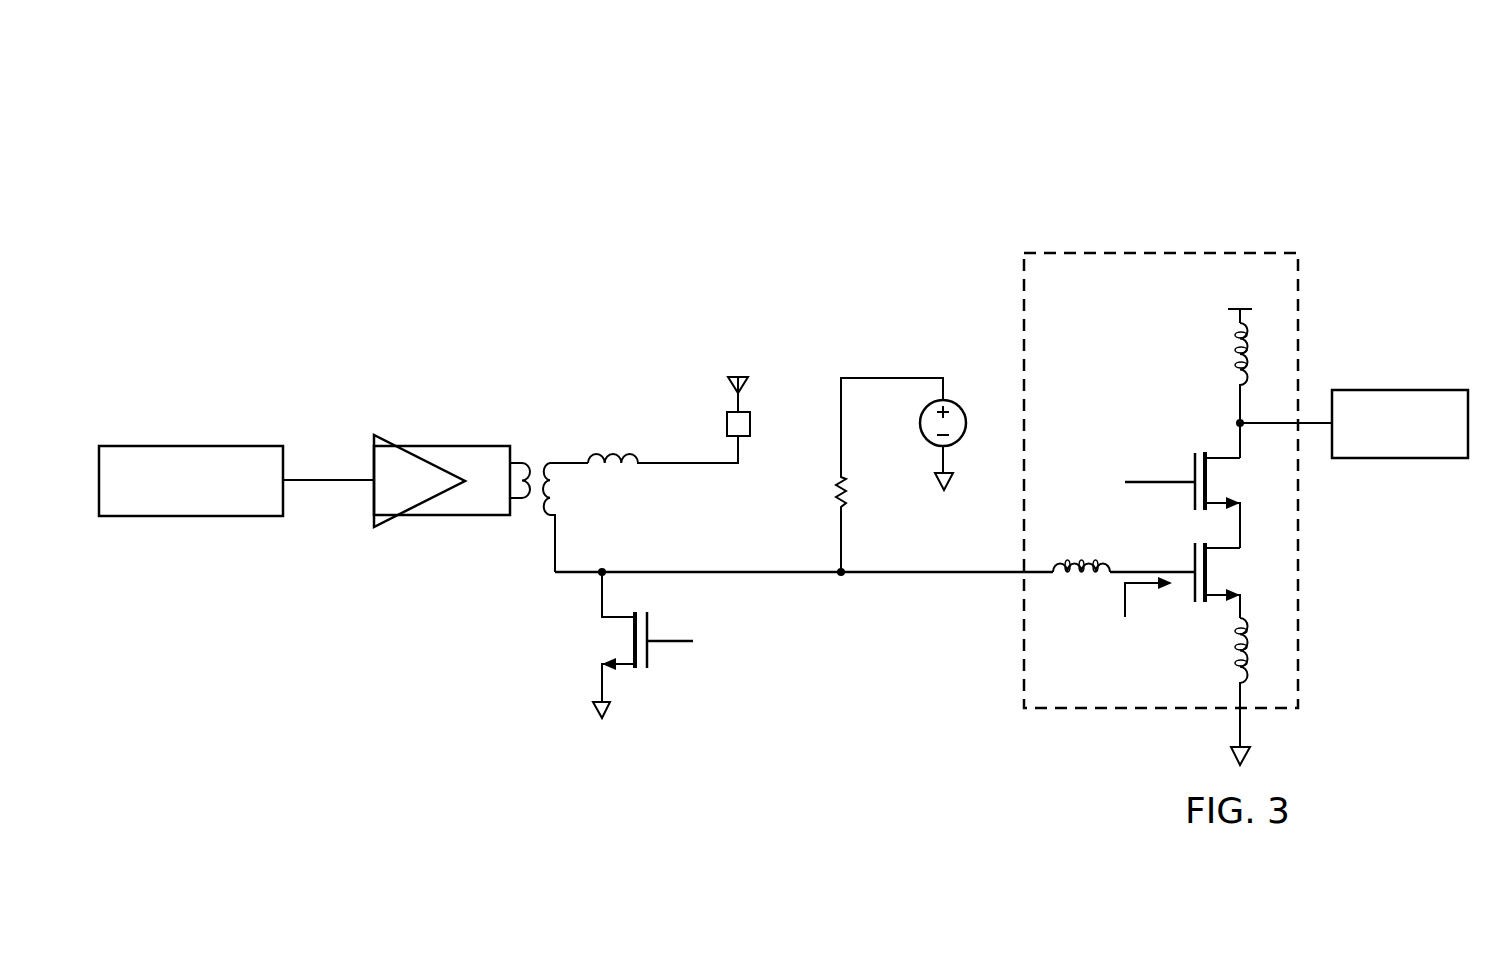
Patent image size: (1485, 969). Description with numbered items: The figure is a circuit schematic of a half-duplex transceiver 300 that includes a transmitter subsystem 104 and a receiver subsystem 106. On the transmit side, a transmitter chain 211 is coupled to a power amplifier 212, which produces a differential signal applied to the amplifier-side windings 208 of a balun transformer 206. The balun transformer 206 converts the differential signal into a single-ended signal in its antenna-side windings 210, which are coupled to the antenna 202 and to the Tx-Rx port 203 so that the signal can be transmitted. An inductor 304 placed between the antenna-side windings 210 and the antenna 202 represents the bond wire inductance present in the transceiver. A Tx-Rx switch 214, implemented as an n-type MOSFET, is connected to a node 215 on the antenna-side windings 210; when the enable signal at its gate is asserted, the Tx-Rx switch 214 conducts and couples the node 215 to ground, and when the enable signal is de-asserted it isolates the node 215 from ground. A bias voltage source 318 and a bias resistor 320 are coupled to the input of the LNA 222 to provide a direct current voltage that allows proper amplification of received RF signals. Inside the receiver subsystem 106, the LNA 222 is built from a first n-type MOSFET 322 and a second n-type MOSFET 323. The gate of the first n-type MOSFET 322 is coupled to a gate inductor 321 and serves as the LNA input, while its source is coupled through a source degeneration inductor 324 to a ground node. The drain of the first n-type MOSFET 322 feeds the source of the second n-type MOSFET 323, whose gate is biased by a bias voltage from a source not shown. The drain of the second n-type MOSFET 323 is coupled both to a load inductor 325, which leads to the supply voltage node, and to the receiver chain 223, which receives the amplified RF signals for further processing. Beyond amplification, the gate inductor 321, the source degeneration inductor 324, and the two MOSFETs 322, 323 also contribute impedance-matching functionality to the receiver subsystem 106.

The half-duplex transceiver 300 is at (300, 180).
The transmitter subsystem 104 is at (440, 258).
The receiver subsystem 106 is at (1002, 234).
The antenna 202 is at (742, 377).
The Tx-Rx port 203 is at (752, 424).
The balun transformer 206 is at (532, 385).
The amplifier-side windings 208 is at (528, 462).
The antenna-side windings 210 is at (545, 520).
The transmitter chain 211 is at (190, 446).
The power amplifier 212 is at (370, 455).
The Tx-Rx switch 214 is at (650, 652).
The node 215 is at (605, 568).
The LNA 222 is at (1226, 248).
The receiver chain 223 is at (1400, 390).
The inductor 304 is at (628, 445).
The bias voltage source 318 is at (962, 410).
The bias resistor 320 is at (846, 490).
The gate inductor 321 is at (1075, 582).
The first n-type MOSFET 322 is at (1192, 560).
The second n-type MOSFET 323 is at (1192, 468).
The source degeneration inductor 324 is at (1232, 655).
The load inductor 325 is at (1230, 350).